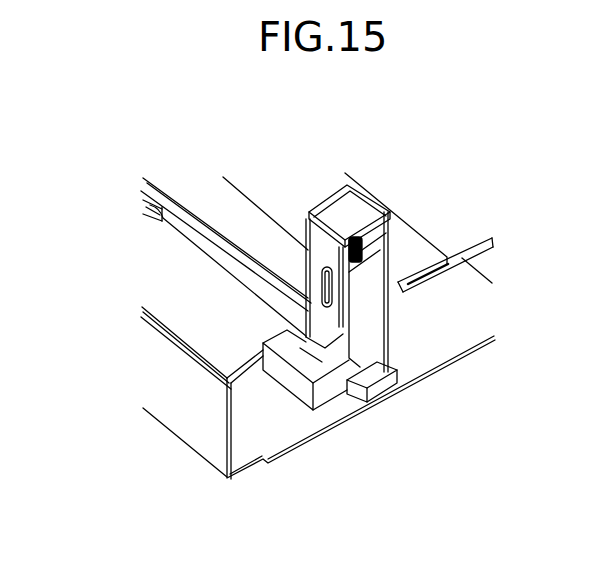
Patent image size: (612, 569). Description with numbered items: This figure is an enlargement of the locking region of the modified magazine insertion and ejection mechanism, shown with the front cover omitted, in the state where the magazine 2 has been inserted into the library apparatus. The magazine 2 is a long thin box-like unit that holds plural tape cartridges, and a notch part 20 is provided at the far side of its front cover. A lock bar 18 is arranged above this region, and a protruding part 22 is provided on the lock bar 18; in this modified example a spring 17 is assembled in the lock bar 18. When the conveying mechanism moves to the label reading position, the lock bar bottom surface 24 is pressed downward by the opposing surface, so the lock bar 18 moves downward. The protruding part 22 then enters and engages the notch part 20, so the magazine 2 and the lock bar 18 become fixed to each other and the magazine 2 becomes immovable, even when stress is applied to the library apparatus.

The magazine 2 is at (174, 283).
The spring 17 is at (407, 220).
The lock bar 18 is at (373, 328).
The notch part 20 is at (262, 347).
The protruding part 22 is at (287, 338).
The lock bar bottom surface 24 is at (337, 403).